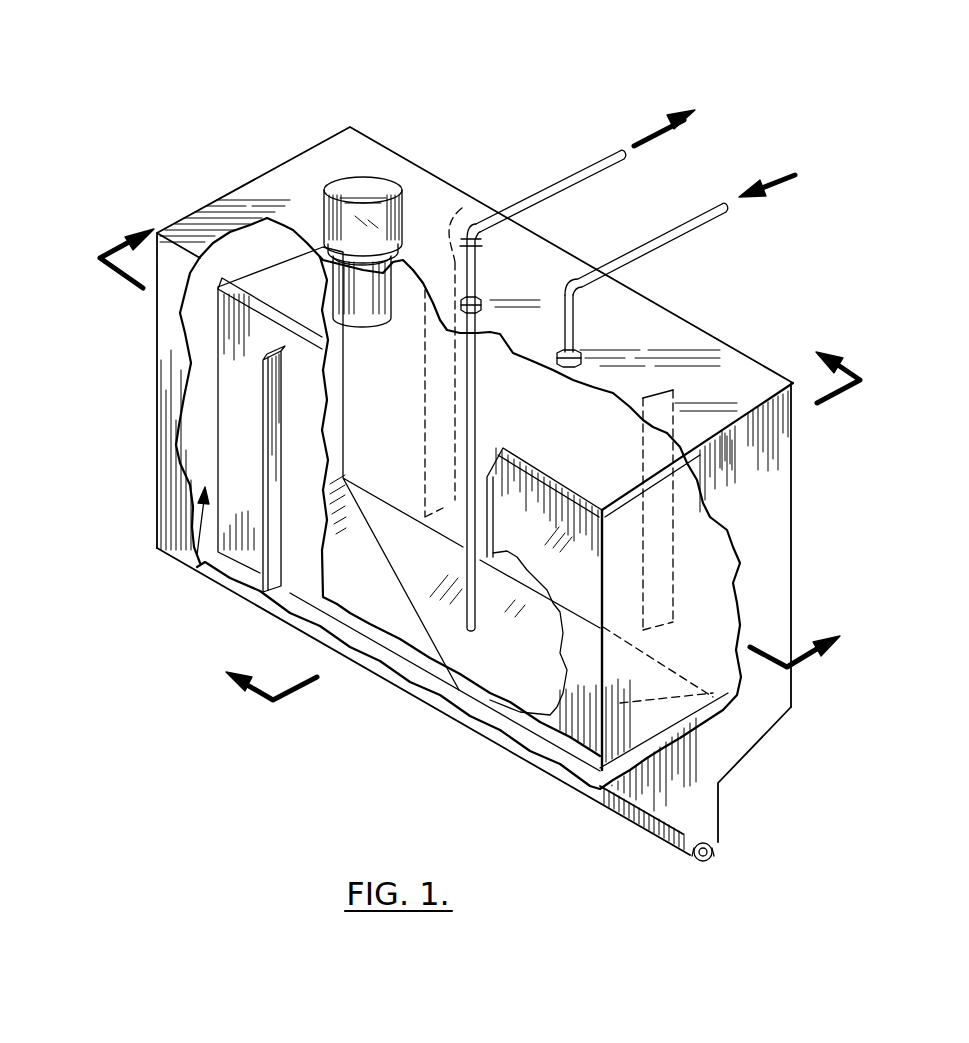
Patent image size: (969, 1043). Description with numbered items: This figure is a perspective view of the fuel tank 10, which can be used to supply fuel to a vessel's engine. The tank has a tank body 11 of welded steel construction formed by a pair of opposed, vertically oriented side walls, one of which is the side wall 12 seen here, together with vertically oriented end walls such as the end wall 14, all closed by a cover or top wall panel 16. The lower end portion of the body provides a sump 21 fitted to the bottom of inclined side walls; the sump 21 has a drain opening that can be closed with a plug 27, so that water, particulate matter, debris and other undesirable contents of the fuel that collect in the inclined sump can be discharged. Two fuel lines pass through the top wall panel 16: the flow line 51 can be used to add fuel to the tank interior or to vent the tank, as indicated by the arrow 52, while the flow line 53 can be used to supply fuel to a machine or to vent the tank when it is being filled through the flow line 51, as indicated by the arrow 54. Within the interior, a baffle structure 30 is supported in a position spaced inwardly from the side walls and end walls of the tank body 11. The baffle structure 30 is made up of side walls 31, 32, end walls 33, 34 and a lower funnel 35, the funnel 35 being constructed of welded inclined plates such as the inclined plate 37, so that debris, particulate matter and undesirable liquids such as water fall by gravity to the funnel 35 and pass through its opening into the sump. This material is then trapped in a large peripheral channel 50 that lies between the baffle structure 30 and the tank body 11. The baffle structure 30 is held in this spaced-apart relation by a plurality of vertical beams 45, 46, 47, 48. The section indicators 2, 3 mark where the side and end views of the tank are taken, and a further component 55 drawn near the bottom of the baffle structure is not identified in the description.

The fuel tank 10 is at (612, 80).
The tank body 11 is at (398, 150).
The side wall 12 is at (168, 464).
The end wall 14 is at (778, 530).
The top wall panel 16 is at (676, 326).
The sump 21 is at (652, 828).
The plug 27 is at (713, 857).
The baffle structure 30 is at (217, 330).
The side wall 31 is at (232, 385).
The side wall 32 is at (640, 360).
The end wall 33 is at (765, 703).
The end wall 34 is at (290, 240).
The lower funnel 35 is at (343, 590).
The inclined plate 37 is at (507, 677).
The vertical beam 45 is at (505, 500).
The vertical beam 46 is at (290, 378).
The vertical beam 47 is at (690, 388).
The vertical beam 48 is at (462, 208).
The peripheral channel 50 is at (200, 565).
The flow line 51 is at (668, 233).
The arrow 52 is at (762, 190).
The flow line 53 is at (553, 190).
The arrow 54 is at (666, 140).
The floor plate 55 is at (413, 621).
The section line 2- 2 is at (484, 426).
The section line 3- 3 is at (525, 504).